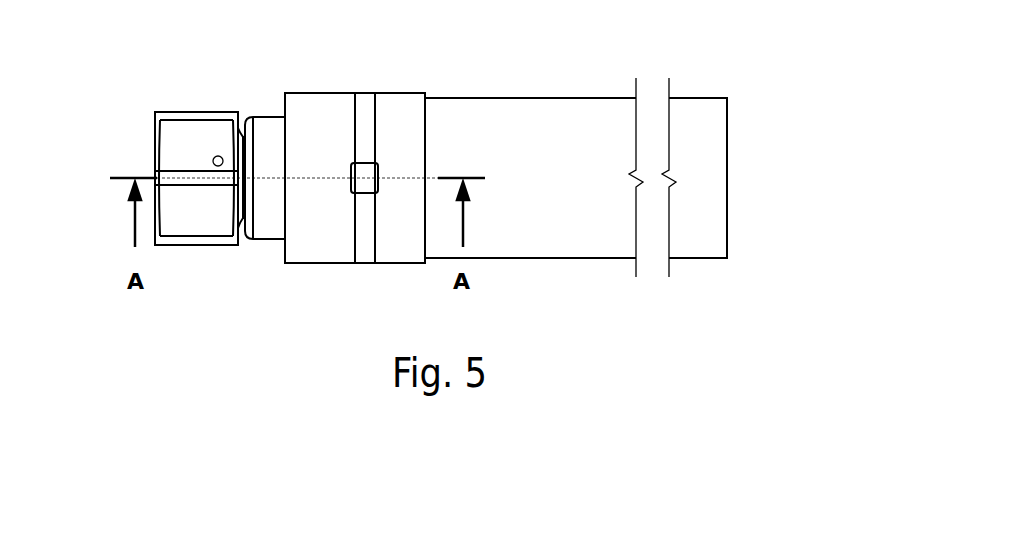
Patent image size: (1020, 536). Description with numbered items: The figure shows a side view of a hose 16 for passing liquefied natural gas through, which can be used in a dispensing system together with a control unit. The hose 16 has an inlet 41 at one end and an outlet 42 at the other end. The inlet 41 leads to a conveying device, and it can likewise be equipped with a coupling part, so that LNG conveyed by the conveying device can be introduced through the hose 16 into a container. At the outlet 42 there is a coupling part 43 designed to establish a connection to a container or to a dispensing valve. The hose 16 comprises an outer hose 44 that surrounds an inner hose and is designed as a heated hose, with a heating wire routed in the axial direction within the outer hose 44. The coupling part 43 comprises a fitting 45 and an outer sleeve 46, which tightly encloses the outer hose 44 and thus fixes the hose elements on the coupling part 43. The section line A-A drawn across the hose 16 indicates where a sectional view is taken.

The hose 16 is at (341, 66).
The inlet 41 is at (726, 162).
The outlet 42 is at (155, 145).
The coupling part 43 is at (247, 285).
The outer hose 44 is at (537, 98).
The fitting 45 is at (212, 112).
The outer sleeve 46 is at (388, 263).